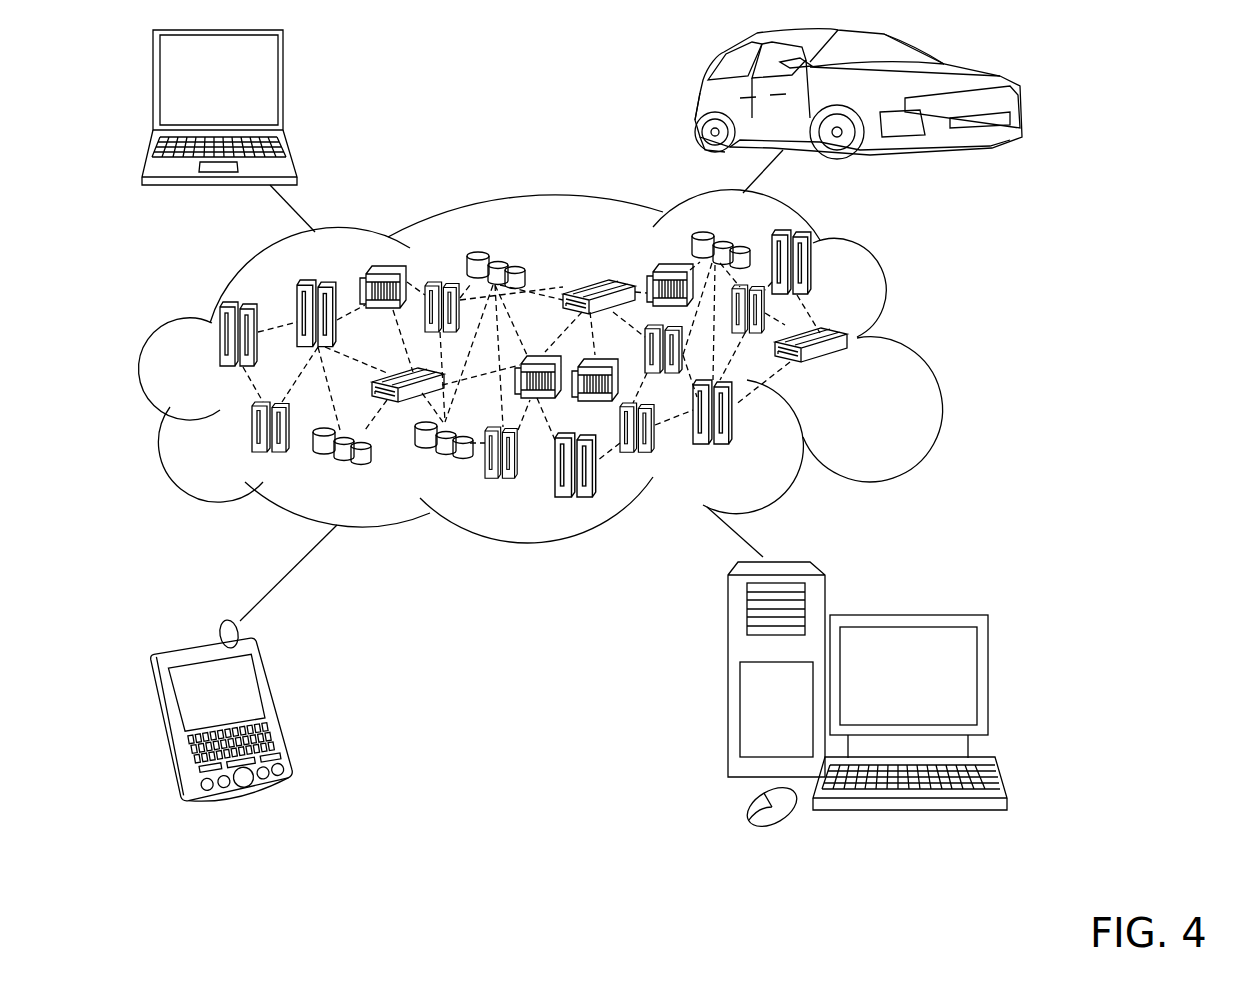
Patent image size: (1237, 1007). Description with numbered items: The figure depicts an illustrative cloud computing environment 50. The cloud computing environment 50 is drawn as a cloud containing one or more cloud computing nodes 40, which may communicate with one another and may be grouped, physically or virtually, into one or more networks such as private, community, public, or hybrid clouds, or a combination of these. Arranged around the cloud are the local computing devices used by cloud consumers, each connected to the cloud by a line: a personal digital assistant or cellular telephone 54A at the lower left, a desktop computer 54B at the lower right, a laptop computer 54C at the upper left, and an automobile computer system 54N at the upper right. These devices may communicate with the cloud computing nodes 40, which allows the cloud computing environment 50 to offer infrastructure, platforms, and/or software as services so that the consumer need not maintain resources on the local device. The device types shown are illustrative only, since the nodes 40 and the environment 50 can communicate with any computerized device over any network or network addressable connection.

The cloud computing environment 50 is at (907, 343).
The cloud computing node 40 is at (848, 369).
The personal digital assistant or cellular telephone 54A is at (278, 706).
The desktop computer 54B is at (905, 615).
The laptop computer 54C is at (283, 88).
The automobile computer system 54N is at (698, 100).